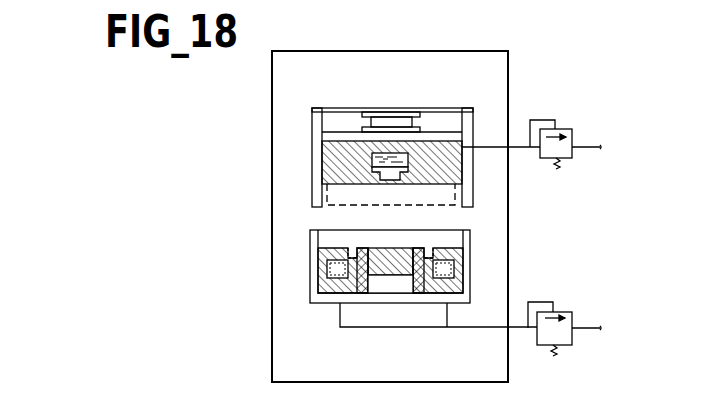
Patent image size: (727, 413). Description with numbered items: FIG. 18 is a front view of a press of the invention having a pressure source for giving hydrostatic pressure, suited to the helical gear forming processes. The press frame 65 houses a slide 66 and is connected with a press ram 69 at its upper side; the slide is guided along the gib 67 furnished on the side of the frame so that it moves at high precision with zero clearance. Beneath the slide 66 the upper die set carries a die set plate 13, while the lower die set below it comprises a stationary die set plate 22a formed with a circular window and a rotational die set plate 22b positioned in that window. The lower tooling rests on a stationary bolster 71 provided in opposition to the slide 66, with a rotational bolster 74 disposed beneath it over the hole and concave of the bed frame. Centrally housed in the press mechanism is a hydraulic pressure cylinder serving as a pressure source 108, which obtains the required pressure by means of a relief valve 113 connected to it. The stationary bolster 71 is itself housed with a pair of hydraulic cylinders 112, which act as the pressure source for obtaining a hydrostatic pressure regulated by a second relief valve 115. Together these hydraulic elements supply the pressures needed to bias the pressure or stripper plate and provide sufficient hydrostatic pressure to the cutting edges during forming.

The die set plate 13 is at (340, 191).
The stationary die set plate 22a is at (352, 256).
The rotational die set plate 22b is at (429, 256).
The press frame 65 is at (283, 208).
The slide 66 is at (330, 156).
The gib 67 is at (468, 108).
The press ram 69 is at (388, 112).
The stationary bolster 71 is at (318, 288).
The rotational bolster 74 is at (393, 264).
The pressure source 108 is at (410, 171).
The hydraulic cylinder 112 is at (330, 268).
The relief valve 113 is at (570, 129).
The relief valve 115 is at (541, 348).